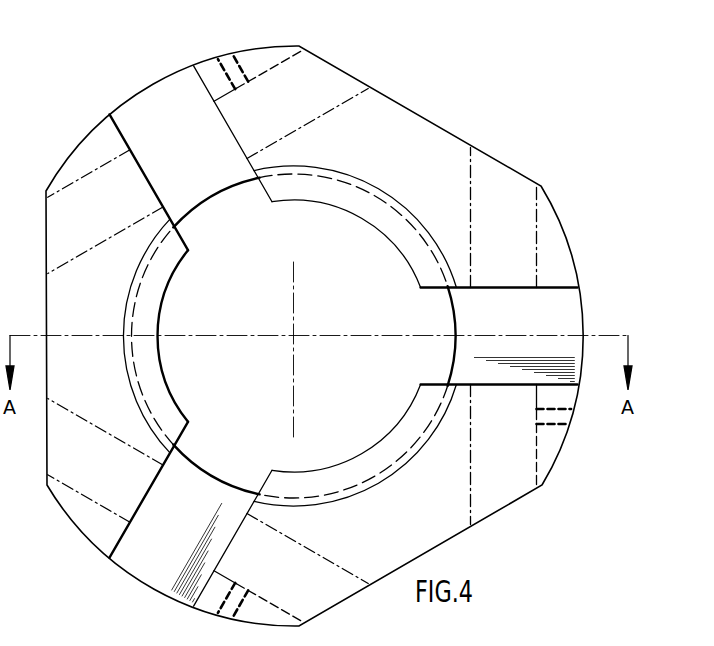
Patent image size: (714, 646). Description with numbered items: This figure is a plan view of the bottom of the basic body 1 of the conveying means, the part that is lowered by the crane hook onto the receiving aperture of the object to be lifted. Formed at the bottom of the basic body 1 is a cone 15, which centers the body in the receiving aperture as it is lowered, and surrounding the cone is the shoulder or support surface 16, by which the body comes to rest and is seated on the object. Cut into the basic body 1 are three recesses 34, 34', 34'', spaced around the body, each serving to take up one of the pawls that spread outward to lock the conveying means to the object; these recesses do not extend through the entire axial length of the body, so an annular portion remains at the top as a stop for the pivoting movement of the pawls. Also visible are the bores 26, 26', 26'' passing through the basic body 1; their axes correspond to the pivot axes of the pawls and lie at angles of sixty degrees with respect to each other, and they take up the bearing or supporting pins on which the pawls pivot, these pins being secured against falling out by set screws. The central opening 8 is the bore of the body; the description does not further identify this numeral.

The basic body 1 is at (438, 141).
The central bore 8 is at (172, 392).
The cone 15 is at (318, 200).
The shoulder 16 is at (385, 154).
The bore 26 is at (303, 606).
The bore 26' is at (522, 274).
The bore 26'' is at (299, 69).
The recess 34 is at (140, 572).
The recess 34' is at (522, 335).
The recess 34'' is at (191, 150).